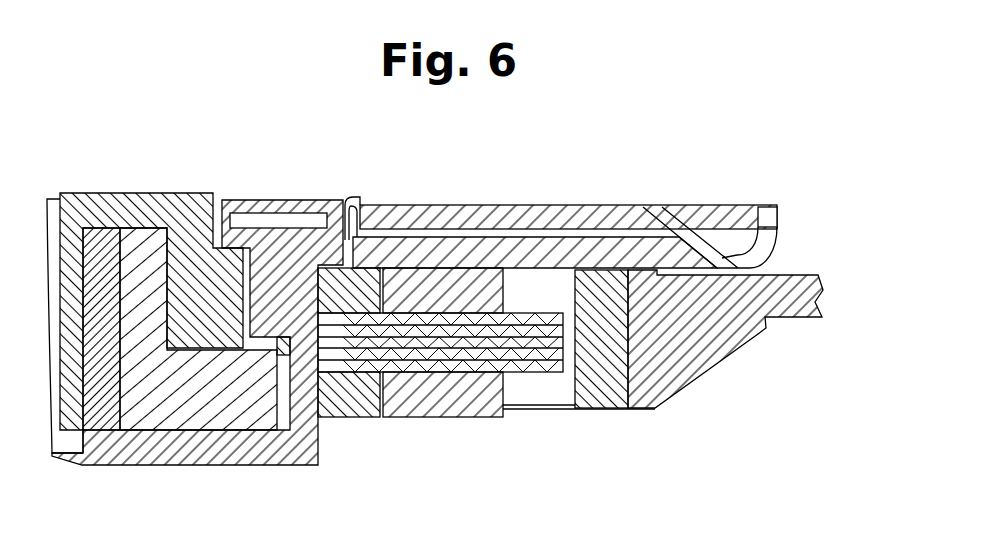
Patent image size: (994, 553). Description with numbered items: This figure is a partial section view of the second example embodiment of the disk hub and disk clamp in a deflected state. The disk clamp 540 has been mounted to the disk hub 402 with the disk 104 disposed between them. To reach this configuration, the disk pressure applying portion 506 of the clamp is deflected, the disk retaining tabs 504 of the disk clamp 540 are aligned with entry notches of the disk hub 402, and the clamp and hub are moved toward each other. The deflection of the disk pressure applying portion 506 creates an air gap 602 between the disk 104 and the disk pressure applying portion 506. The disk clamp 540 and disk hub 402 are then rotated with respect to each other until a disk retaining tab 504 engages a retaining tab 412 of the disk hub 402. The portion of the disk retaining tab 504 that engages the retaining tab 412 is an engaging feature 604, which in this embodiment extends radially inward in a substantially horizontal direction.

The disk hub 402 is at (197, 305).
The retaining tab 412 is at (360, 183).
The disk retaining tab 504 is at (535, 206).
The disk clamp 540 is at (568, 181).
The disk pressure applying portion 506 is at (710, 225).
The disk 104 is at (727, 277).
The air gap 602 is at (554, 387).
The engaging feature 604 is at (374, 391).